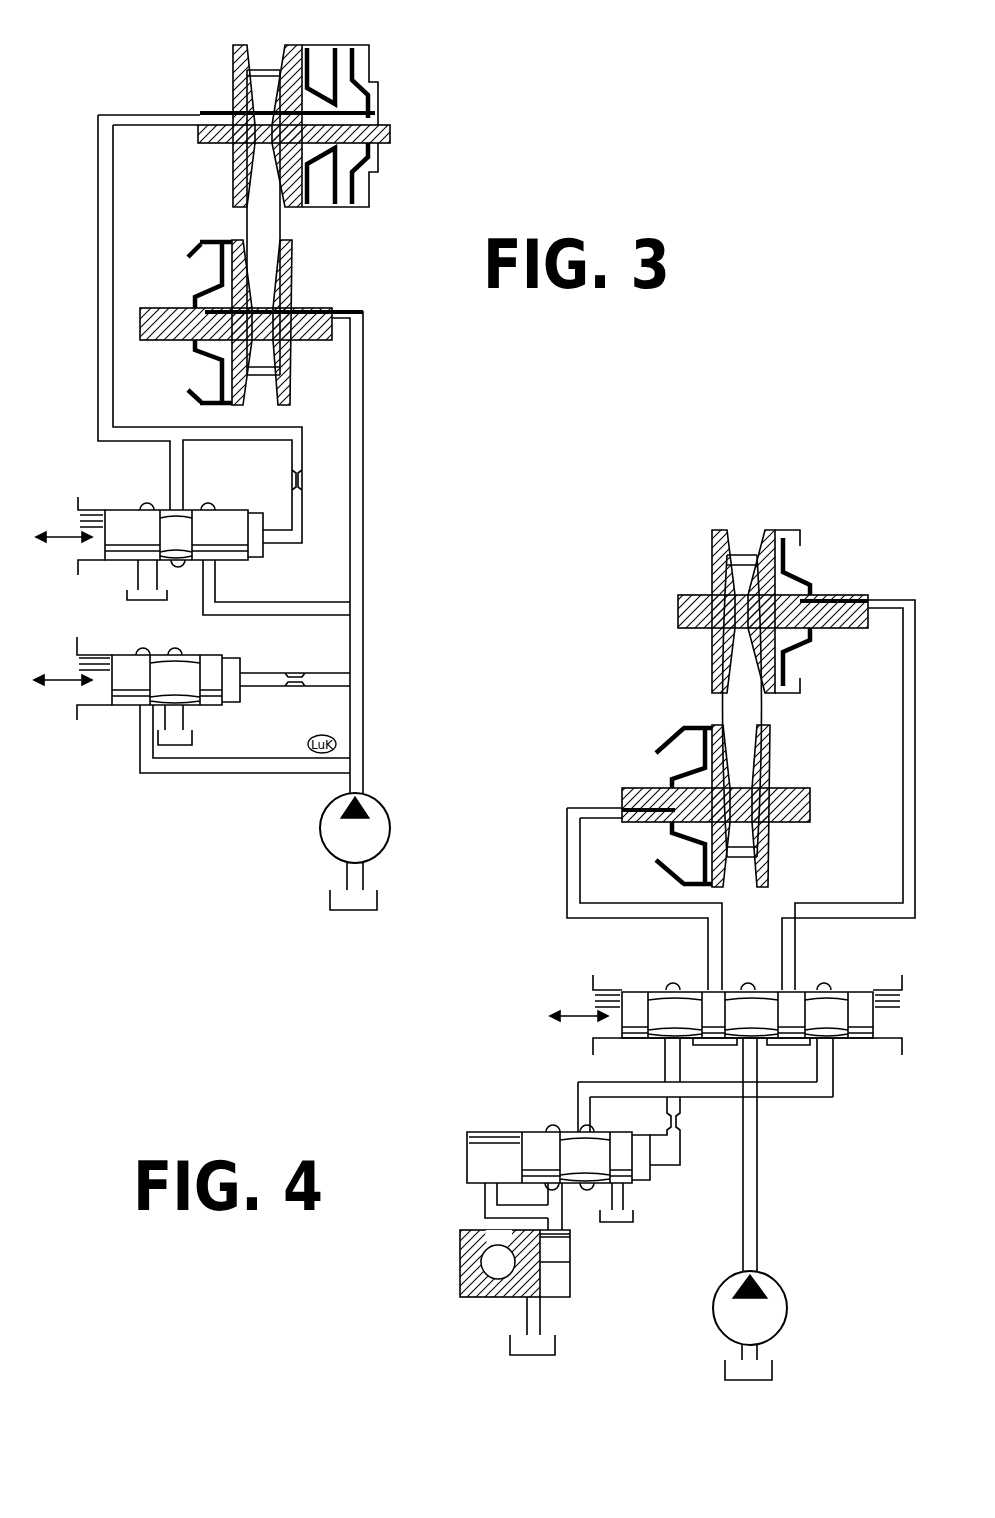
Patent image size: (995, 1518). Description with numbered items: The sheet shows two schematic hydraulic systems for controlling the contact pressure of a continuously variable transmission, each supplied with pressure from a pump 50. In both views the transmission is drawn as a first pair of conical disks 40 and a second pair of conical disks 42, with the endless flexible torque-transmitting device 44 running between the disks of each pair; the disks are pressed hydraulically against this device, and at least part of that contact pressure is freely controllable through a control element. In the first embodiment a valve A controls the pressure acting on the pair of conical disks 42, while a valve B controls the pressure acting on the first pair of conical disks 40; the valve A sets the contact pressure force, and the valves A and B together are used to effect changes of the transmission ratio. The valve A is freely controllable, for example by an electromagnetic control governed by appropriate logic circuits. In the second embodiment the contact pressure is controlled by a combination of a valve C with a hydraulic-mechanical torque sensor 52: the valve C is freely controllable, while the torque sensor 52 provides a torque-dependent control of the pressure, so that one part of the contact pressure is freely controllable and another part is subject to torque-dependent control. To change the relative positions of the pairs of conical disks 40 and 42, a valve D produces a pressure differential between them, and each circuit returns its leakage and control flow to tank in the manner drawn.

In FIG. 3, the first pair of conical disks 40 is at (233, 63).
In FIG. 4, the first pair of conical disks 40 is at (712, 554).
In FIG. 3, the pair of conical disks 42 is at (293, 290).
In FIG. 4, the pair of conical disks 42 is at (763, 771).
In FIG. 3, the belt / chain 44 is at (262, 228).
In FIG. 4, the belt / chain 44 is at (737, 711).
In FIG. 3, the pump 50 is at (337, 835).
In FIG. 4, the pump 50 is at (728, 1312).
In FIG. 4, the hydraulic-mechanical torque sensor 52 is at (468, 1245).
In FIG. 3, the valve A is at (130, 688).
In FIG. 3, the valve B is at (120, 515).
In FIG. 4, the valve C is at (475, 1160).
In FIG. 4, the valve D is at (633, 1000).